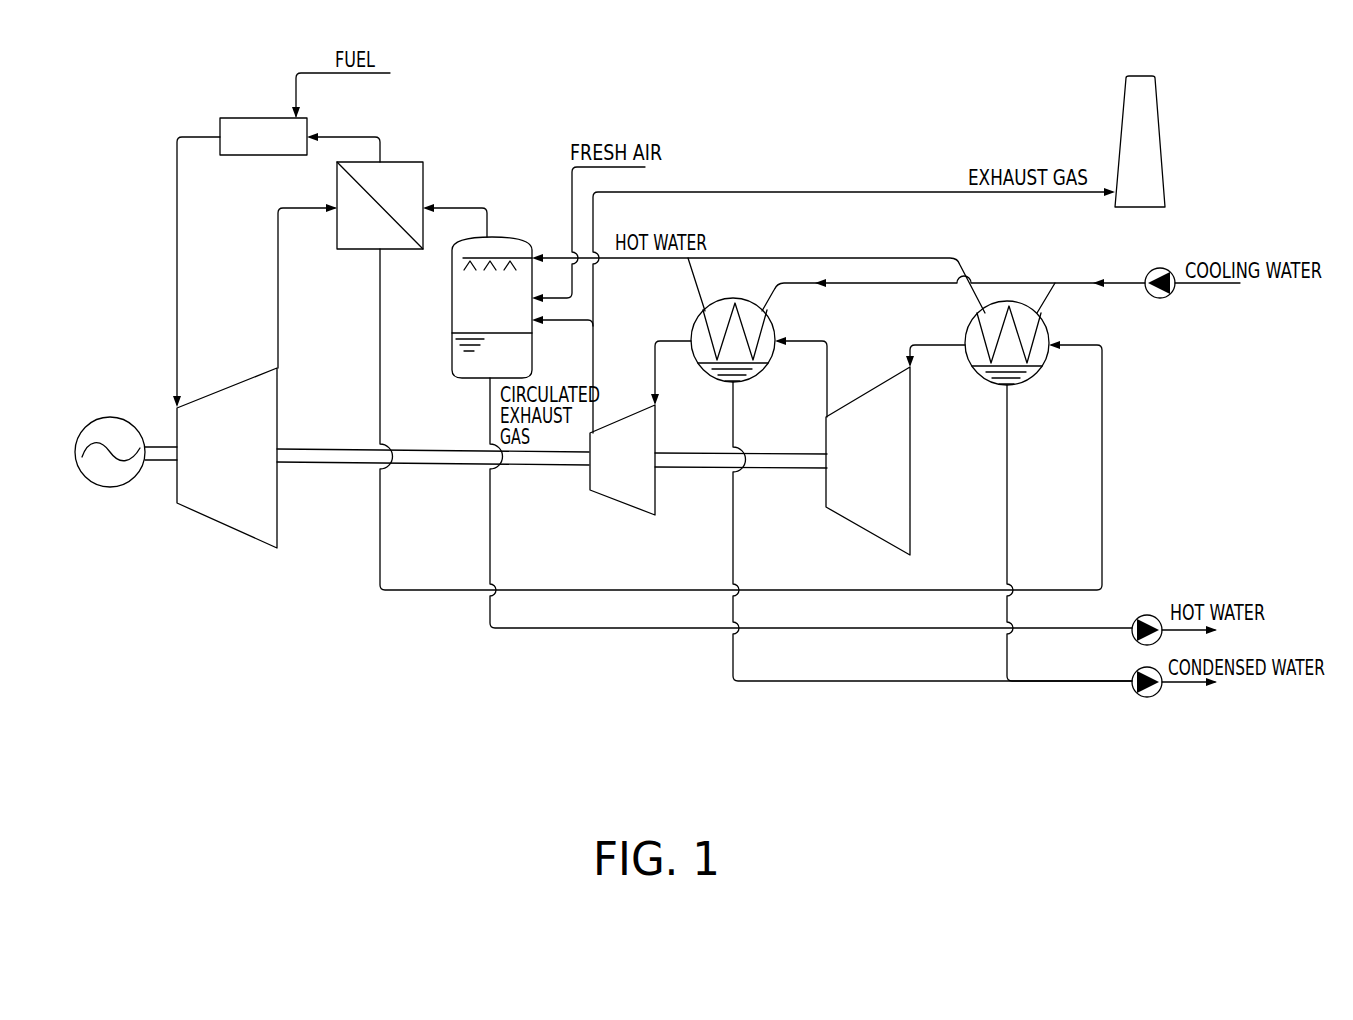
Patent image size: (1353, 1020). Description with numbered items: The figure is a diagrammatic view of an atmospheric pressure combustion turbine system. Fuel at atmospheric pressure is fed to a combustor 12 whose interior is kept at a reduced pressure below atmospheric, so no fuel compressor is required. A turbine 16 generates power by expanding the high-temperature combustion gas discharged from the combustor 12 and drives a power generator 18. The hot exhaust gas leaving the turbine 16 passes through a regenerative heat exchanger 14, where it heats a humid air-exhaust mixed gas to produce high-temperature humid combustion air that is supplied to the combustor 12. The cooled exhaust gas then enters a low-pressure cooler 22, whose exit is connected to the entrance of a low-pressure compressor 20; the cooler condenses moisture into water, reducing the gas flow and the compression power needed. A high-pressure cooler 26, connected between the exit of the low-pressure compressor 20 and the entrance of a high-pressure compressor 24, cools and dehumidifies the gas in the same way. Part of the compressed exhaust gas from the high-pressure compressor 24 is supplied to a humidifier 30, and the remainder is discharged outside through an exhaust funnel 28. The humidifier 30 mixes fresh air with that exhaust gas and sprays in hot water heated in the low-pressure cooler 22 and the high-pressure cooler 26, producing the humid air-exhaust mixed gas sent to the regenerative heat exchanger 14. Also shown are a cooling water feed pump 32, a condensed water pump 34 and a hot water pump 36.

The combustor 12 is at (250, 155).
The regenerative heat exchanger 14 is at (350, 250).
The turbine 16 is at (232, 387).
The power generator 18 is at (107, 417).
The low-pressure compressor 20 is at (860, 532).
The low-pressure cooler 22 is at (987, 380).
The high-pressure compressor 24 is at (618, 507).
The high-pressure cooler 26 is at (717, 380).
The exhaust funnel 28 is at (1120, 133).
The humidifier 30 is at (448, 360).
The cooling water feed pump 32 is at (1158, 300).
The condensed water pump 34 is at (1143, 699).
The hot water pump 36 is at (1148, 615).